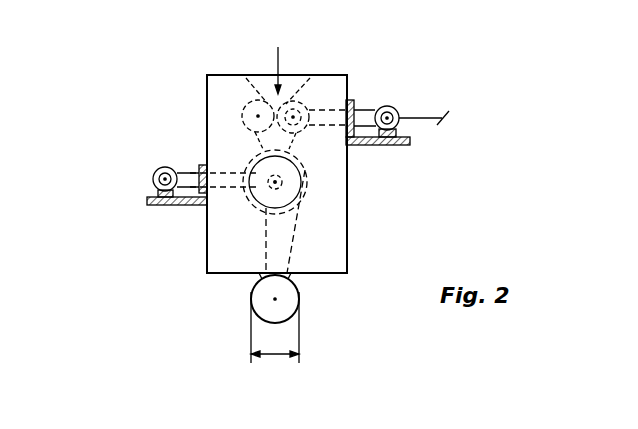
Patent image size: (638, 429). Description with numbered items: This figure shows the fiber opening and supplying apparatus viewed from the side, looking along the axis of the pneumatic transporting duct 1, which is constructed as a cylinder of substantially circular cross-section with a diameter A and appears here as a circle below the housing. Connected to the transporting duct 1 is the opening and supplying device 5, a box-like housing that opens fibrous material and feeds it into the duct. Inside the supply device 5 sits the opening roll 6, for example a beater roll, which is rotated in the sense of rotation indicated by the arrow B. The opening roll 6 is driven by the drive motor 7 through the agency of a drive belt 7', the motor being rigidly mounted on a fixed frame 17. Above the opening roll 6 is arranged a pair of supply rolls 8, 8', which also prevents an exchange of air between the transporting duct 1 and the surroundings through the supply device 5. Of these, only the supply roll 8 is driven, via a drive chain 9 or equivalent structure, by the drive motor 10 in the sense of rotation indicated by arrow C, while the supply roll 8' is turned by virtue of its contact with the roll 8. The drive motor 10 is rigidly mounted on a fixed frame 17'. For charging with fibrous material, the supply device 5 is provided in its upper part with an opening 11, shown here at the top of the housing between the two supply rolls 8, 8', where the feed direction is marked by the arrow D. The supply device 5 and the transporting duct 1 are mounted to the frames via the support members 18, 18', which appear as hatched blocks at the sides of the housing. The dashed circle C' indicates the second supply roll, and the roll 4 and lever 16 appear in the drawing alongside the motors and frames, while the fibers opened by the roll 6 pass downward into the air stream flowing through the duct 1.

The pneumatic transporting duct 1 is at (250, 295).
The roll 4 is at (290, 298).
The opening and supplying device 5 is at (205, 93).
The opening roll 6 is at (310, 203).
The drive motor 7 is at (152, 174).
The drive belt 7' is at (136, 143).
The supply roll 8 is at (331, 73).
The supply roll 8' is at (213, 73).
The drive chain 9 is at (375, 111).
The drive motor 10 is at (400, 118).
The opening 11 is at (267, 100).
The lever 16 is at (425, 121).
The fixed frame 17 is at (402, 161).
The fixed frame 17' is at (165, 220).
The support member 18 is at (377, 90).
The support member 18' is at (186, 149).
The diameter A is at (272, 355).
The sense of rotation arrow B is at (293, 177).
The sense of rotation arrow C is at (311, 96).
The small roller C' is at (255, 77).
The feed direction D is at (278, 47).